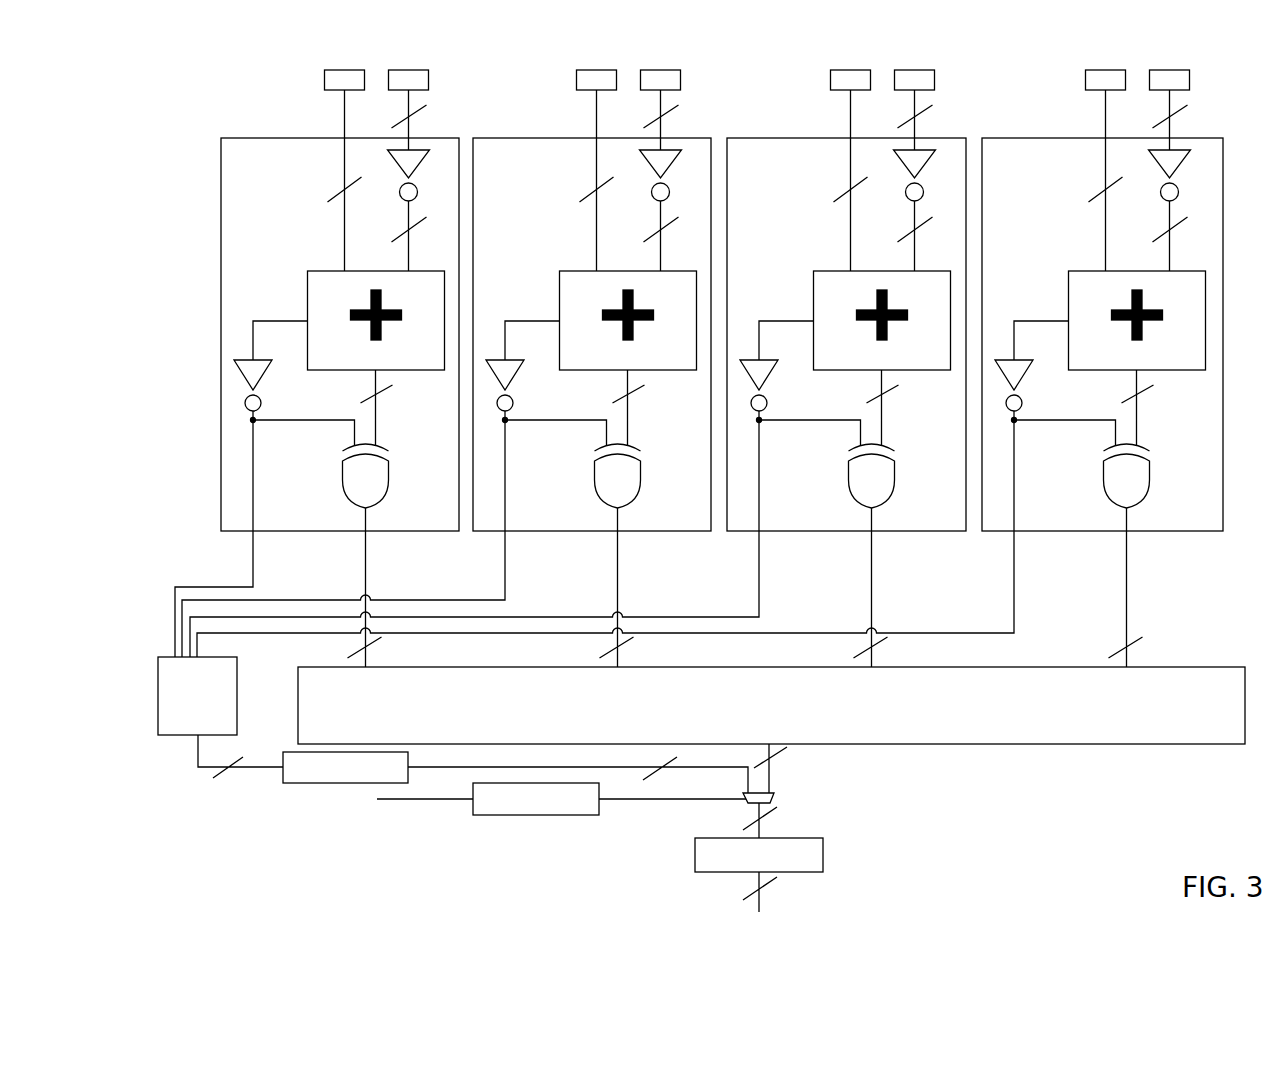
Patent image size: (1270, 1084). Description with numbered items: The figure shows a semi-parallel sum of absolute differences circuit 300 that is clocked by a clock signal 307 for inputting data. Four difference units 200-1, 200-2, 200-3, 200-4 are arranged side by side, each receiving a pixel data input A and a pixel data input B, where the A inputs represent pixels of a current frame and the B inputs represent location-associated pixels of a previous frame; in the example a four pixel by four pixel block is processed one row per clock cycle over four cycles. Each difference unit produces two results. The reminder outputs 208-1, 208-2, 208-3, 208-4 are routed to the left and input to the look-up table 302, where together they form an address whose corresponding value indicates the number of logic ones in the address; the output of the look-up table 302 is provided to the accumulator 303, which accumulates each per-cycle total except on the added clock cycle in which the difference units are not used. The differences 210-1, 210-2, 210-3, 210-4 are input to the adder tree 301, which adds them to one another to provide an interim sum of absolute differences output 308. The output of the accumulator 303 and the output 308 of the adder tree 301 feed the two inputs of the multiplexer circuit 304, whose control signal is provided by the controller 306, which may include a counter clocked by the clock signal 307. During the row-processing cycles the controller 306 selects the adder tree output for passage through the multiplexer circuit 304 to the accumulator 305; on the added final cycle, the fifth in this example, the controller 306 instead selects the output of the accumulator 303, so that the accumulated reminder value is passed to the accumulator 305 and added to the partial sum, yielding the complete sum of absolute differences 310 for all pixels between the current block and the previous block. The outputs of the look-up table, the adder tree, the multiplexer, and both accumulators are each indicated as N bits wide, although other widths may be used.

The semi-parallel sum of absolute differences circuit 300 is at (228, 865).
The difference unit 200-1 is at (336, 300).
The difference unit 200-2 is at (588, 300).
The difference unit 200-3 is at (842, 300).
The difference unit 200-4 is at (1098, 300).
The reminder output 208-1 is at (256, 551).
The reminder output 208-2 is at (508, 551).
The reminder output 208-3 is at (762, 551).
The reminder output 208-4 is at (1017, 551).
The difference 210-1 is at (369, 585).
The difference 210-2 is at (621, 585).
The difference 210-3 is at (875, 585).
The difference 210-4 is at (1130, 585).
The adder tree 301 is at (771, 705).
The look-up table 302 is at (197, 696).
The accumulator 303 is at (291, 784).
The multiplexer circuit 304 is at (777, 794).
The accumulator 305 is at (824, 845).
The controller 306 is at (537, 816).
The clock signal 307 is at (405, 800).
The interim sum of absolute differences output 308 is at (773, 777).
The complete sum of absolute differences 310 is at (765, 901).